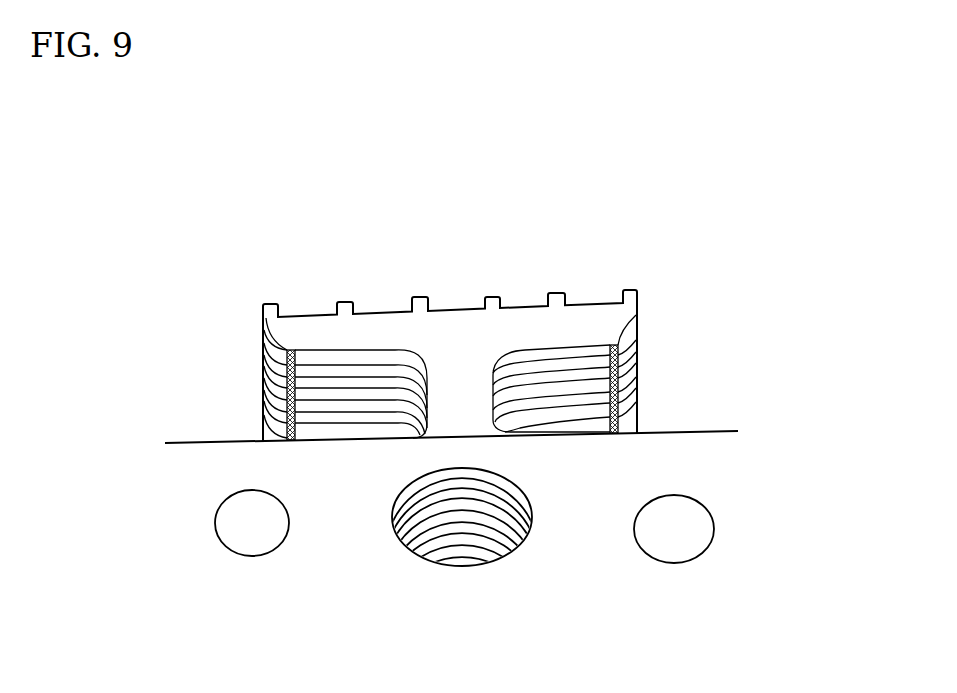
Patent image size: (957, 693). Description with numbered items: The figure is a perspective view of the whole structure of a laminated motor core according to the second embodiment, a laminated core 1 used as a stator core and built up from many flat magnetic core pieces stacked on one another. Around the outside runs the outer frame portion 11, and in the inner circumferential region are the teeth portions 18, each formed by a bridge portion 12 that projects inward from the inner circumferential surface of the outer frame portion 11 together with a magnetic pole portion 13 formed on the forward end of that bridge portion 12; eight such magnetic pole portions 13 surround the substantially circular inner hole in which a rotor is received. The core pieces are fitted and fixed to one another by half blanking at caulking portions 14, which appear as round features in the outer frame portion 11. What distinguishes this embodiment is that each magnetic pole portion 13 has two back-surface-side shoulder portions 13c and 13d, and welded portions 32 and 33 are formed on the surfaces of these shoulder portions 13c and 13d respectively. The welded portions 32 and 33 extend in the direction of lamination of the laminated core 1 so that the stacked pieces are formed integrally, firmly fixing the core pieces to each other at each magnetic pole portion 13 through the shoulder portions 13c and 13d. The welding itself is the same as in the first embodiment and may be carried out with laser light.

The laminated core 1 is at (450, 296).
The outer frame portion 11 is at (722, 482).
The bridge portion 12 is at (457, 405).
The magnetic pole portion 13 is at (452, 330).
The back-surface-side shoulder portion 13c is at (272, 363).
The back-surface-side shoulder portion 13d is at (628, 352).
The caulking portion 14 is at (232, 543).
The teeth portion 18 is at (593, 293).
The welded portion 32 is at (280, 408).
The welded portion 33 is at (635, 377).